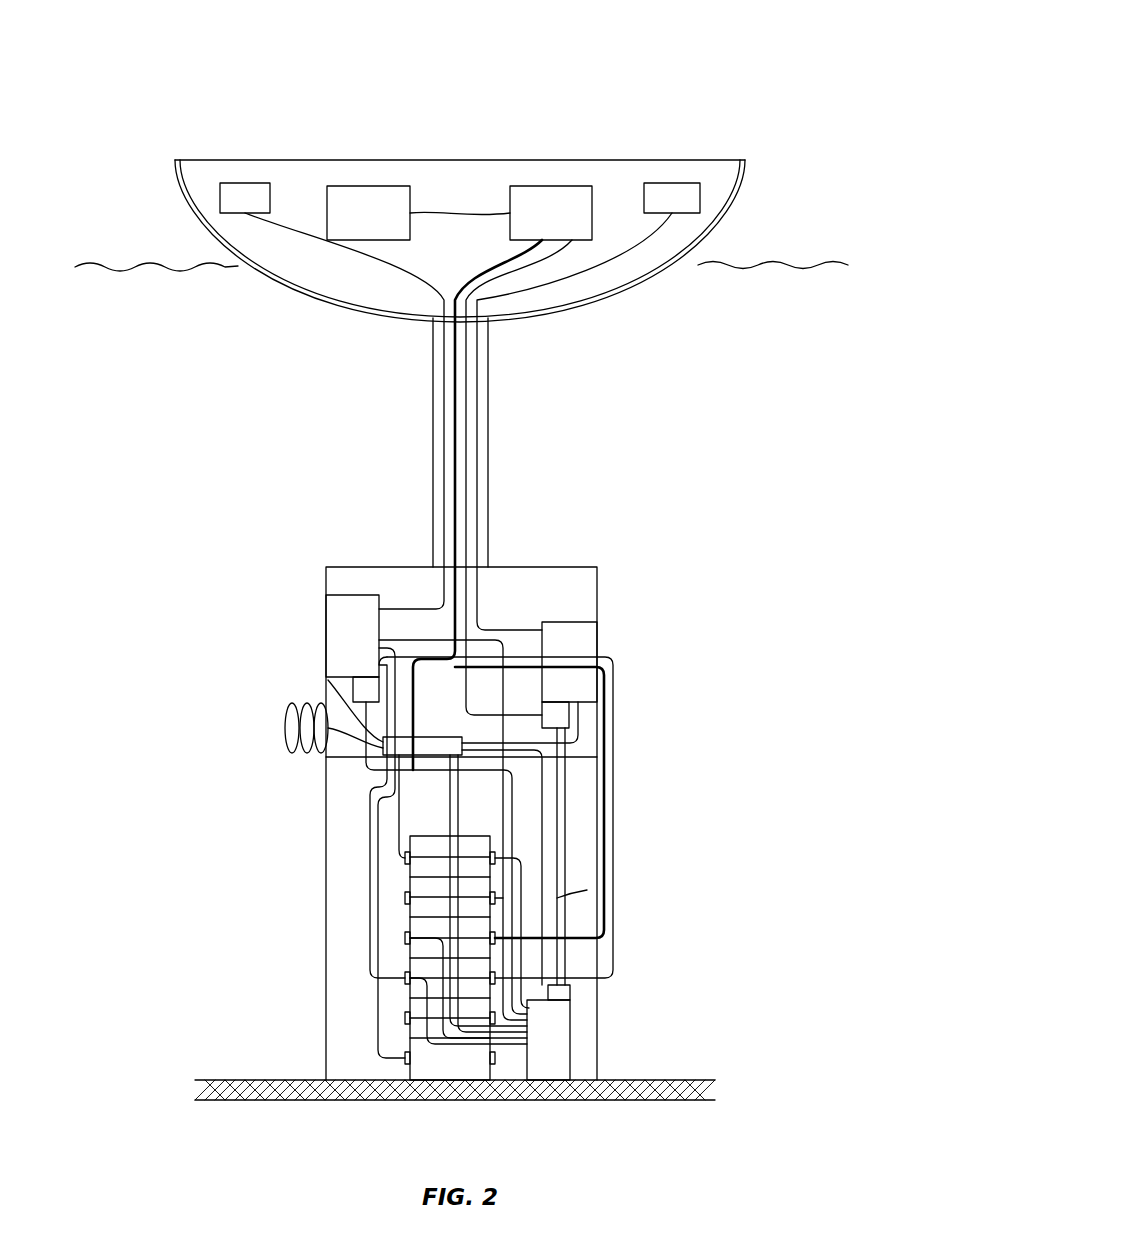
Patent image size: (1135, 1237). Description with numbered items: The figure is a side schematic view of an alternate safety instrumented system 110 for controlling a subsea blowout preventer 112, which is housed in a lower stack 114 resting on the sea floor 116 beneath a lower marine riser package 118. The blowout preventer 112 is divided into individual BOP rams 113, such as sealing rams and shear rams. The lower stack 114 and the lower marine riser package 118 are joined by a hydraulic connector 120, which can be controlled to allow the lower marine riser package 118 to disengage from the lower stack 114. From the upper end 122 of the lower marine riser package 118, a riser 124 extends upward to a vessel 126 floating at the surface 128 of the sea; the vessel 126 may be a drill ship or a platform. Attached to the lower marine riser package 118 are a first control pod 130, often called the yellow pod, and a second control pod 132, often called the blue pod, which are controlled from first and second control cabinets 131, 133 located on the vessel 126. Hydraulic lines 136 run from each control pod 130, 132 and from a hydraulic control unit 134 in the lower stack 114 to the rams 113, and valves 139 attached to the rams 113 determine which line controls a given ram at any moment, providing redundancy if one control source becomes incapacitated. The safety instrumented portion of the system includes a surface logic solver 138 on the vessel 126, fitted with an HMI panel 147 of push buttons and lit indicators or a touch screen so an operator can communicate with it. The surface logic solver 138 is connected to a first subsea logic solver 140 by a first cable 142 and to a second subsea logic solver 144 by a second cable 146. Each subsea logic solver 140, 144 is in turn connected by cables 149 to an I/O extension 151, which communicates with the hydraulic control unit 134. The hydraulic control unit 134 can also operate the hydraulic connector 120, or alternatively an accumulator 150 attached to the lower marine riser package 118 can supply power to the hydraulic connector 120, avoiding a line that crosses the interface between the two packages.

The system 110 is at (780, 110).
The subsea blowout preventer 112 is at (346, 1042).
The BOP rams 113 is at (446, 902).
The lower stack 114 is at (338, 877).
The sea floor 116 is at (280, 1103).
The lower marine riser package 118 is at (583, 592).
The hydraulic connector 120 is at (450, 745).
The upper end 122 is at (526, 565).
The riser 124 is at (432, 426).
The vessel 126 is at (312, 278).
The surface 128 is at (765, 262).
The first control pod 130 is at (340, 636).
The first control cabinet 131 is at (245, 198).
The second control pod 132 is at (583, 645).
The second control cabinet 133 is at (672, 198).
The hydraulic control unit 134 is at (575, 1038).
The hydraulic lines 136 is at (612, 777).
The surface logic solver 138 is at (551, 213).
The valves 139 is at (400, 957).
The first subsea logic solver 140 is at (352, 690).
The first cable 142 is at (453, 476).
The second subsea logic solver 144 is at (572, 716).
The second cable 146 is at (467, 405).
The HMI panel 147 is at (418, 213).
The cables 149 is at (587, 890).
The accumulator 150 is at (285, 732).
The I/O extension 151 is at (575, 994).